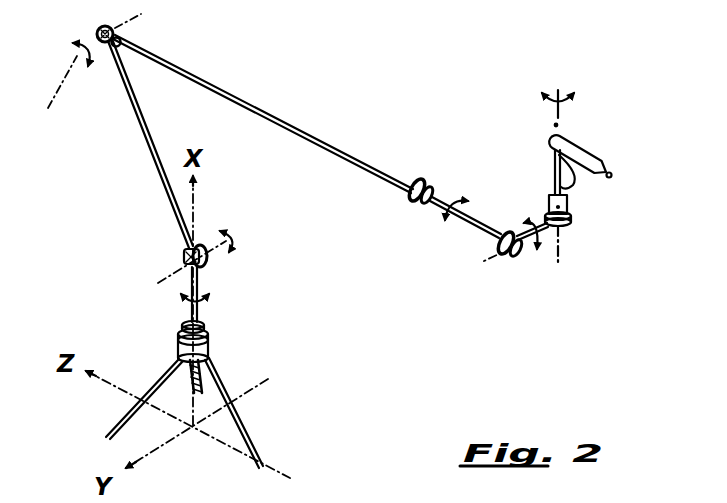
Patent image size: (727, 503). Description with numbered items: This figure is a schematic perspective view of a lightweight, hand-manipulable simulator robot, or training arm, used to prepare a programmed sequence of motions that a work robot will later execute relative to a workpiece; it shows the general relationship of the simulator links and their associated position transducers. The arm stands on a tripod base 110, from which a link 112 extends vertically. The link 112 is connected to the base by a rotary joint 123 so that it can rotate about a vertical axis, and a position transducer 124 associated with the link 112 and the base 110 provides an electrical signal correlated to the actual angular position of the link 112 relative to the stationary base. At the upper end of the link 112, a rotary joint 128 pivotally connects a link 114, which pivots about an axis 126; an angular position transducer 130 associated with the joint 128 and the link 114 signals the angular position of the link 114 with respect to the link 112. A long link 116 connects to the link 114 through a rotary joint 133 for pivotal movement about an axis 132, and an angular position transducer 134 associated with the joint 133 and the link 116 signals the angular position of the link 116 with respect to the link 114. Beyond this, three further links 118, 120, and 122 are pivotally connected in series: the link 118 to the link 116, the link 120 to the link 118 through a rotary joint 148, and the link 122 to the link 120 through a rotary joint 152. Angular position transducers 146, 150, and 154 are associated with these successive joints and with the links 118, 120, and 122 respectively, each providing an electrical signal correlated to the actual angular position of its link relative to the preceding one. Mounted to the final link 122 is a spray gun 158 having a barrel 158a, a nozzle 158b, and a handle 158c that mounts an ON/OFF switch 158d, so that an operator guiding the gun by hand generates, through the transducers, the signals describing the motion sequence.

The tripod base 110 is at (232, 367).
The link 112 is at (199, 286).
The link 114 is at (146, 137).
The link 116 is at (306, 98).
The link 118 is at (477, 224).
The link 120 is at (544, 236).
The link 122 is at (606, 195).
The rotary joint 123 is at (209, 342).
The position transducer 124 is at (204, 327).
The axis 126 is at (164, 287).
The rotary joint 128 is at (204, 242).
The angular position transducer 130 is at (184, 258).
The axis 132 is at (58, 96).
The rotary joint 133 is at (118, 29).
The angular position transducer 134 is at (107, 45).
The angular position transducer 146 is at (430, 203).
The rotary joint 148 is at (518, 260).
The angular position transducer 150 is at (505, 258).
The rotary joint 152 is at (571, 226).
The angular position transducer 154 is at (571, 221).
The spray gun 158 is at (591, 134).
The barrel 158a is at (578, 153).
The nozzle 158b is at (612, 175).
The handle 158c is at (552, 156).
The ON/OFF switch 158d is at (558, 186).